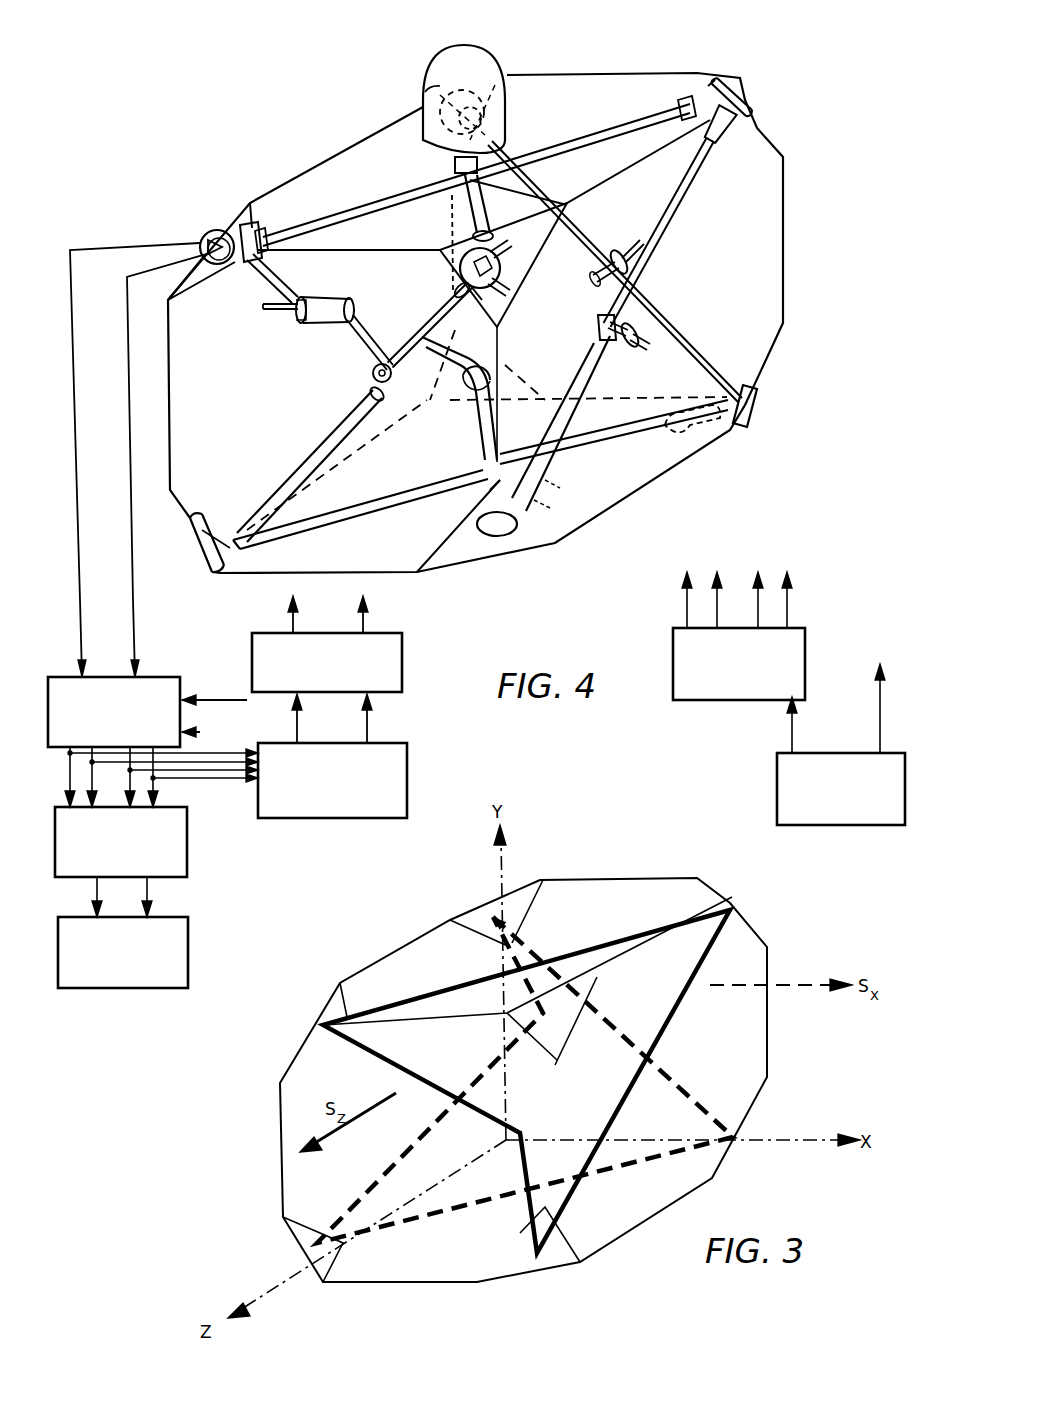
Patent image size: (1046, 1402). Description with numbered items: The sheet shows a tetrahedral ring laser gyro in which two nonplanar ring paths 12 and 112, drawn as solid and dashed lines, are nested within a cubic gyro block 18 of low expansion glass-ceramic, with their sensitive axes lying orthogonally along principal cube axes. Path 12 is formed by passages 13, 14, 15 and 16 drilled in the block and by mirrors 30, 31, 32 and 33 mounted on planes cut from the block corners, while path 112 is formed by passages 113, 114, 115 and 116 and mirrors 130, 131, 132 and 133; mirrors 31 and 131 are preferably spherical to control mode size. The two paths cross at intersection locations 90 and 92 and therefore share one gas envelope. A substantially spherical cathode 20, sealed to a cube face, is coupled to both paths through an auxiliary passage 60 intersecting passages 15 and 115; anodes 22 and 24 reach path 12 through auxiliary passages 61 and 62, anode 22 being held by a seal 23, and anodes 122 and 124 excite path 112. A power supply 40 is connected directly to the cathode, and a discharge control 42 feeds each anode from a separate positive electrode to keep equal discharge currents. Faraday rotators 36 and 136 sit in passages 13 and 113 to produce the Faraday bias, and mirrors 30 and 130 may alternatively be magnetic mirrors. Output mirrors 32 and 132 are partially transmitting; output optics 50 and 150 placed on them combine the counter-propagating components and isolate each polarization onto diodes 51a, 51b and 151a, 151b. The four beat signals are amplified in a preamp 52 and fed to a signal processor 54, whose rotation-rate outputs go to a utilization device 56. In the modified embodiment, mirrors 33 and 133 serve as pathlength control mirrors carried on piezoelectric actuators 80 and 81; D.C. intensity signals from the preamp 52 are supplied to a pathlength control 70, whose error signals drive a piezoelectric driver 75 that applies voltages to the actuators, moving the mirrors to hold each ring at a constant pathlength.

In FIG. 3, the ring path 12 is at (462, 978).
In FIG. 3, the ring path 112 is at (492, 1058).
In FIG. 4, the passage 13 is at (474, 437).
In FIG. 4, the passage 14 is at (375, 318).
In FIG. 4, the passage 15 is at (367, 204).
In FIG. 4, the passage 16 is at (688, 195).
In FIG. 4, the gyro block 18 is at (775, 228).
In FIG. 4, the cathode 20 is at (490, 52).
In FIG. 4, the anode 22 is at (265, 307).
In FIG. 4, the seal 23 is at (300, 315).
In FIG. 4, the anode 24 is at (648, 340).
In FIG. 4, the mirror 30 is at (505, 540).
In FIG. 4, the mirror 31 is at (497, 355).
In FIG. 4, the mirror 32 is at (224, 224).
In FIG. 4, the mirror 33 is at (712, 88).
In FIG. 4, the Faraday rotator 36 is at (542, 488).
In FIG. 4, the power supply 40 is at (906, 746).
In FIG. 4, the discharge control 42 is at (803, 629).
In FIG. 4, the output optics 50 is at (213, 228).
In FIG. 4, the diode 51a is at (212, 236).
In FIG. 4, the diode 51b is at (200, 240).
In FIG. 4, the preamp 52 is at (178, 677).
In FIG. 4, the signal processor 54 is at (188, 801).
In FIG. 4, the utilization device 56 is at (190, 912).
In FIG. 4, the auxiliary passage 60 is at (452, 200).
In FIG. 4, the auxiliary passage 61 is at (329, 298).
In FIG. 4, the auxiliary passage 62 is at (600, 318).
In FIG. 4, the pathlength control 70 is at (407, 745).
In FIG. 4, the piezoelectric driver 75 is at (402, 636).
In FIG. 4, the piezoelectric actuator 80 is at (750, 95).
In FIG. 4, the piezoelectric actuator 81 is at (423, 80).
In FIG. 4, the intersection location 90 is at (480, 500).
In FIG. 4, the intersection location 92 is at (452, 168).
In FIG. 4, the passage 113 is at (370, 510).
In FIG. 4, the passage 114 is at (305, 430).
In FIG. 4, the passage 115 is at (482, 205).
In FIG. 4, the passage 116 is at (668, 322).
In FIG. 4, the anode 122 is at (374, 370).
In FIG. 4, the anode 124 is at (655, 243).
In FIG. 4, the mirror 130 is at (750, 402).
In FIG. 4, the mirror 131 is at (192, 540).
In FIG. 4, the mirror 132 is at (520, 266).
In FIG. 4, the mirror 133 is at (430, 108).
In FIG. 4, the Faraday rotator 136 is at (678, 438).
In FIG. 4, the output optics 150 is at (462, 268).
In FIG. 4, the diode 151a is at (500, 250).
In FIG. 4, the diode 151b is at (508, 290).